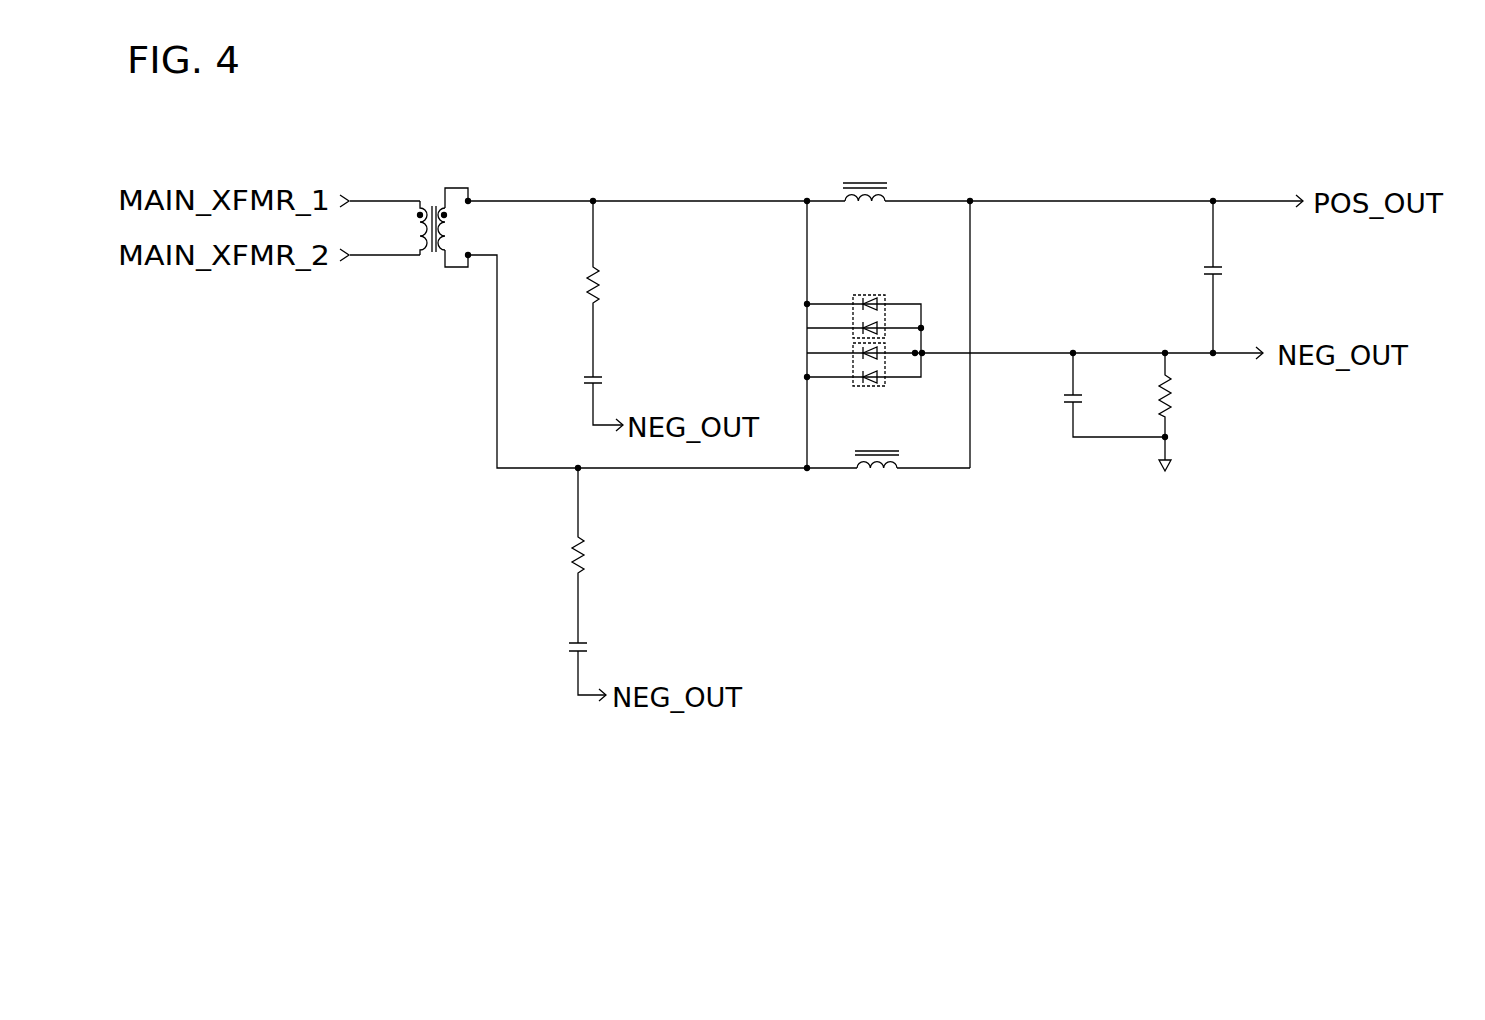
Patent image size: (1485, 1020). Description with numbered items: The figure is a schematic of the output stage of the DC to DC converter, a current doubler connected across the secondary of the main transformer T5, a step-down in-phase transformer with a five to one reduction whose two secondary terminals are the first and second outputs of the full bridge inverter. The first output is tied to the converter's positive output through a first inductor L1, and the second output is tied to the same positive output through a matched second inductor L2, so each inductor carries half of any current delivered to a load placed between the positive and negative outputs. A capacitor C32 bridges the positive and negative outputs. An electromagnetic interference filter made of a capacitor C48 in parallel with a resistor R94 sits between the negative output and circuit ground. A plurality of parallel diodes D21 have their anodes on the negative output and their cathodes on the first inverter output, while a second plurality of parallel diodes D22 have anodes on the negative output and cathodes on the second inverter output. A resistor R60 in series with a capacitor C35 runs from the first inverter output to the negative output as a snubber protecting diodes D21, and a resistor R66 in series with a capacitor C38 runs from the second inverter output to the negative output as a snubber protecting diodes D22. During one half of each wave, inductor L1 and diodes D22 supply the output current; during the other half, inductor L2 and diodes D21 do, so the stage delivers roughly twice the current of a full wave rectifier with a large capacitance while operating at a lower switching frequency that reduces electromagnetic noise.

The main transformer T5 is at (431, 243).
The resistor R60 is at (626, 289).
The capacitor C35 is at (624, 390).
The first inductor L1 is at (865, 174).
The plurality of diodes connected in parallel D21 is at (864, 301).
The plurality of diodes connected in parallel D22 is at (865, 383).
The second inductor L2 is at (877, 478).
The capacitor C32 is at (1243, 277).
The capacitor C48 is at (1114, 395).
The resistor R94 is at (1197, 412).
The resistor R66 is at (607, 555).
The capacitor C38 is at (607, 658).